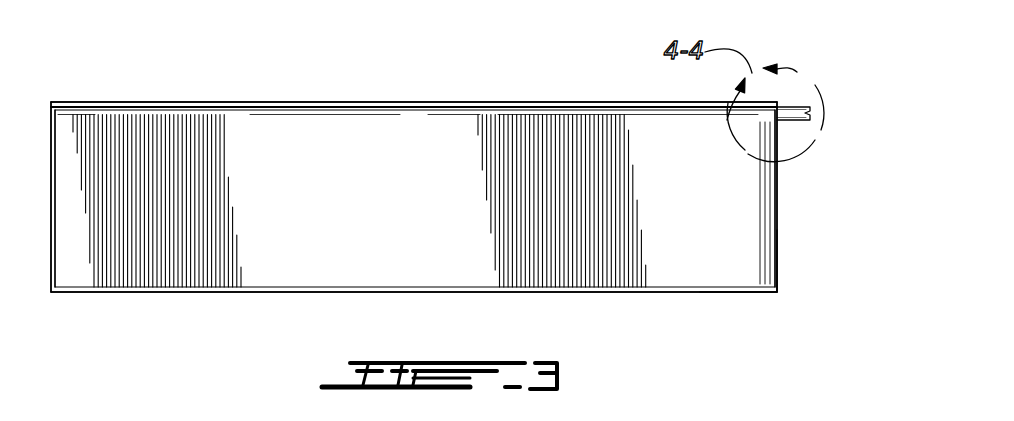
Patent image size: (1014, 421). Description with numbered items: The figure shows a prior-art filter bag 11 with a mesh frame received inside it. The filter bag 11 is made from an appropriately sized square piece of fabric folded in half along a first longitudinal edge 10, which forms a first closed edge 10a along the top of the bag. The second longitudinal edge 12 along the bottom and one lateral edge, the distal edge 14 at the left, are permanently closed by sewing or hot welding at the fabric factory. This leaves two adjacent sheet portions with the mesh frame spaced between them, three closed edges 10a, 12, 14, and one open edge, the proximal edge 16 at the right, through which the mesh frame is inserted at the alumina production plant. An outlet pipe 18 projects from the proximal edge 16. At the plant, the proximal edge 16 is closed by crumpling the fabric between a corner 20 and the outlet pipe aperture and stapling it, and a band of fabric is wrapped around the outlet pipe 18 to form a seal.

The first longitudinal edge 10 is at (248, 101).
The first closed edge 10a is at (446, 101).
The filter bag 11 is at (685, 325).
The second longitudinal edge 12 is at (269, 292).
The distal edge 14 is at (51, 197).
The proximal edge 16 is at (777, 232).
The outlet pipe 18 is at (798, 113).
The corner 20 is at (777, 291).